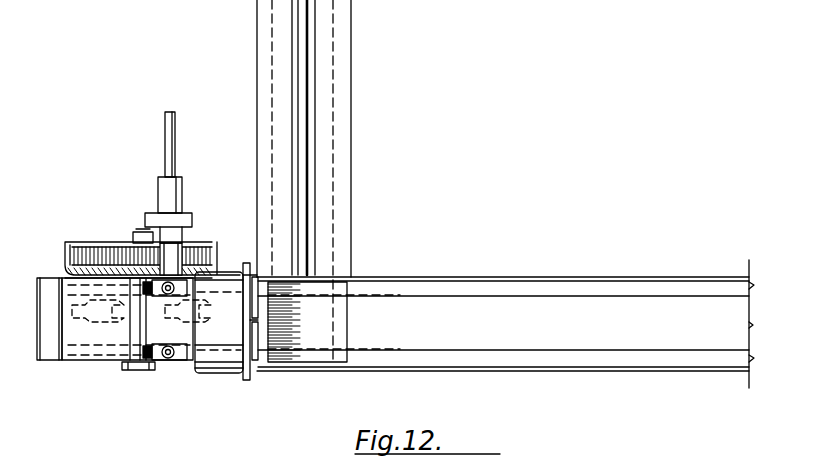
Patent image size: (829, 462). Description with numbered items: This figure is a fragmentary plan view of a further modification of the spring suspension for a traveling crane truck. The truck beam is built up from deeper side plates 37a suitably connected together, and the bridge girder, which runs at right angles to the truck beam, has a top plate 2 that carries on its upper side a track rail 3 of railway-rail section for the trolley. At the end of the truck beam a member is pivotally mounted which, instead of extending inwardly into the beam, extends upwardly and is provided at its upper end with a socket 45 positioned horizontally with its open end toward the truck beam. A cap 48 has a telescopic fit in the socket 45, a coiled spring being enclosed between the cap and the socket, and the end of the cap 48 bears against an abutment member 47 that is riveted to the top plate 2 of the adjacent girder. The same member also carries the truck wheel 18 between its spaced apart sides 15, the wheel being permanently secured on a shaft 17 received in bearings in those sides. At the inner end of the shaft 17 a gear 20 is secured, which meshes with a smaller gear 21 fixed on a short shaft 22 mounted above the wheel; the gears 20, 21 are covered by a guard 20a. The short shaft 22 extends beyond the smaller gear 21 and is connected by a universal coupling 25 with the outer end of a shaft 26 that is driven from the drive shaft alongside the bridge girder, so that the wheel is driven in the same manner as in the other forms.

The top plate 2 is at (338, 176).
The track rail 3 is at (305, 143).
The spaced apart vertical sides 15 is at (102, 350).
The shaft 17 is at (140, 371).
The truck wheel 18 is at (55, 335).
The gear 20 is at (90, 248).
The guard 20a is at (66, 246).
The smaller gear 21 is at (182, 258).
The short shaft 22 is at (172, 226).
The universal coupling 25 is at (192, 218).
The shaft 26 is at (175, 141).
The side plates 37a is at (530, 279).
The socket 45 is at (228, 365).
The abutment member 47 is at (276, 328).
The cap 48 is at (252, 270).